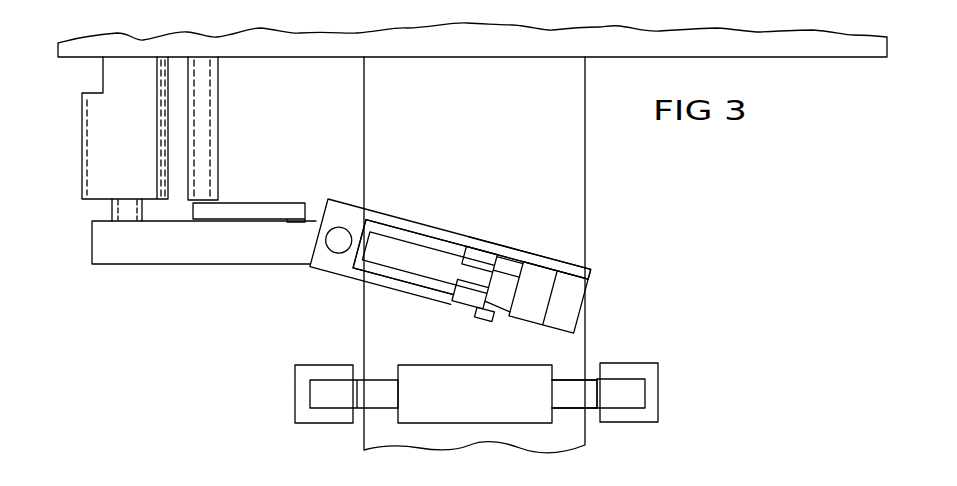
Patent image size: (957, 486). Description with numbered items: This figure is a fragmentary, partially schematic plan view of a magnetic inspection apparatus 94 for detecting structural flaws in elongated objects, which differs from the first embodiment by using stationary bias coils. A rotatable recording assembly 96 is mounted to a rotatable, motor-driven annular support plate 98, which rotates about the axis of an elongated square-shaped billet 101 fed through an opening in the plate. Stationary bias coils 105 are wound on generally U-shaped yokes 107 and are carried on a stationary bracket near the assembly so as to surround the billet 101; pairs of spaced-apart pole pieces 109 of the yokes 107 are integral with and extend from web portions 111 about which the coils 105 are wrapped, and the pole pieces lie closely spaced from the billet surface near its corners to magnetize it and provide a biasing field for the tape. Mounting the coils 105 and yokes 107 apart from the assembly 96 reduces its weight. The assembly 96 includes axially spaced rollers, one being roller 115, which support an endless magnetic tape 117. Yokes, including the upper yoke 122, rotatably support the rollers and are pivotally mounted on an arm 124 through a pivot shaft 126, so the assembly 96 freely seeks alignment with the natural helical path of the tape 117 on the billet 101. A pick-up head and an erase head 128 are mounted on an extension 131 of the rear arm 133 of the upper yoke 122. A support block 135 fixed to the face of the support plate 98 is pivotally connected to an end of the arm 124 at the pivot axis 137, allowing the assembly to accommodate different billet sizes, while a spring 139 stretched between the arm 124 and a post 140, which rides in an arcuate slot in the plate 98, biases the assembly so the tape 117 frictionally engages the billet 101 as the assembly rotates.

The magnetic inspection apparatus 94 is at (183, 428).
The rotatable recording assembly 96 is at (631, 277).
The annular support plate 98 is at (778, 45).
The billet 101 is at (380, 117).
The stationary bias coils 105 is at (294, 398).
The U-shaped yokes 107 is at (573, 409).
The pole pieces 109 is at (597, 387).
The web portions 111 is at (397, 394).
The roller 115 is at (473, 296).
The endless magnetic tape 117 is at (418, 257).
The upper yoke 122 is at (323, 274).
The arm 124 is at (165, 252).
The pivot shaft 126 is at (339, 237).
The pick-up head and erase head 128 is at (573, 303).
The extension 131 is at (557, 263).
The rear arm 133 is at (378, 218).
The support block 135 is at (108, 127).
The pivot axis 137 is at (118, 210).
The spring 139 is at (277, 210).
The post 140 is at (210, 112).